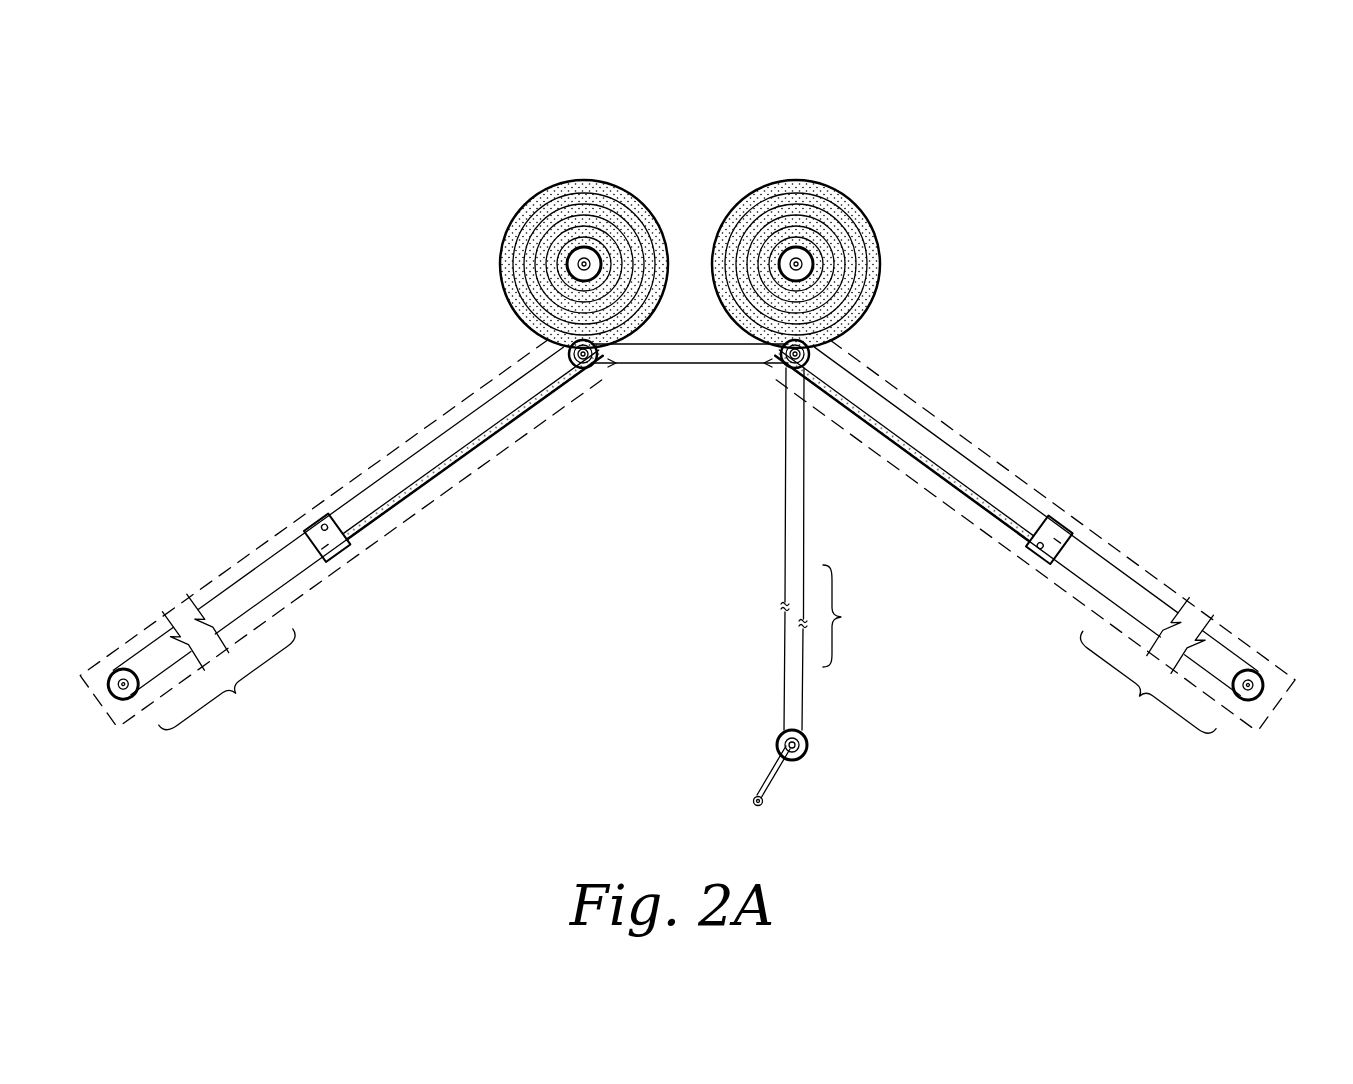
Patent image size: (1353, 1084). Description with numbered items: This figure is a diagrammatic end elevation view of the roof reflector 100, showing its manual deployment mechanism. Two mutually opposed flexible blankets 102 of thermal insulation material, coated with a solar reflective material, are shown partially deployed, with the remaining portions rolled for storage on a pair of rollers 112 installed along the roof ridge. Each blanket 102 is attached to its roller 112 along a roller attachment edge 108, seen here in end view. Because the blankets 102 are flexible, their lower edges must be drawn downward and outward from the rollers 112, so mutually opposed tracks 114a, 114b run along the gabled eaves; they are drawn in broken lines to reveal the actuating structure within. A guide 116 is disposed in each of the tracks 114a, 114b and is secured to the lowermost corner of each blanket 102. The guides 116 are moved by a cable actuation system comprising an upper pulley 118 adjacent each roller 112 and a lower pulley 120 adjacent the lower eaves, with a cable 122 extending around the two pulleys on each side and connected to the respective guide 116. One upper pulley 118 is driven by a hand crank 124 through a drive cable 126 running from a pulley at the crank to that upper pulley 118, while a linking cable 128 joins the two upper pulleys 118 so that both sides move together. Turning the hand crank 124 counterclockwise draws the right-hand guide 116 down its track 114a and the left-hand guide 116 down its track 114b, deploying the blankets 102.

The roof reflector 100 is at (262, 163).
The flexible blanket 102 is at (875, 305).
The roller attachment edge 108 is at (722, 222).
The roller 112 is at (802, 263).
The track 114a is at (1142, 560).
The track 114b is at (212, 566).
The guide 116 is at (1027, 552).
The upper pulley 118 is at (790, 388).
The lower pulley 120 is at (1264, 672).
The cable 122 is at (1077, 570).
The hand crank 124 is at (777, 745).
The drive cable 126 is at (785, 502).
The linking cable 128 is at (695, 364).